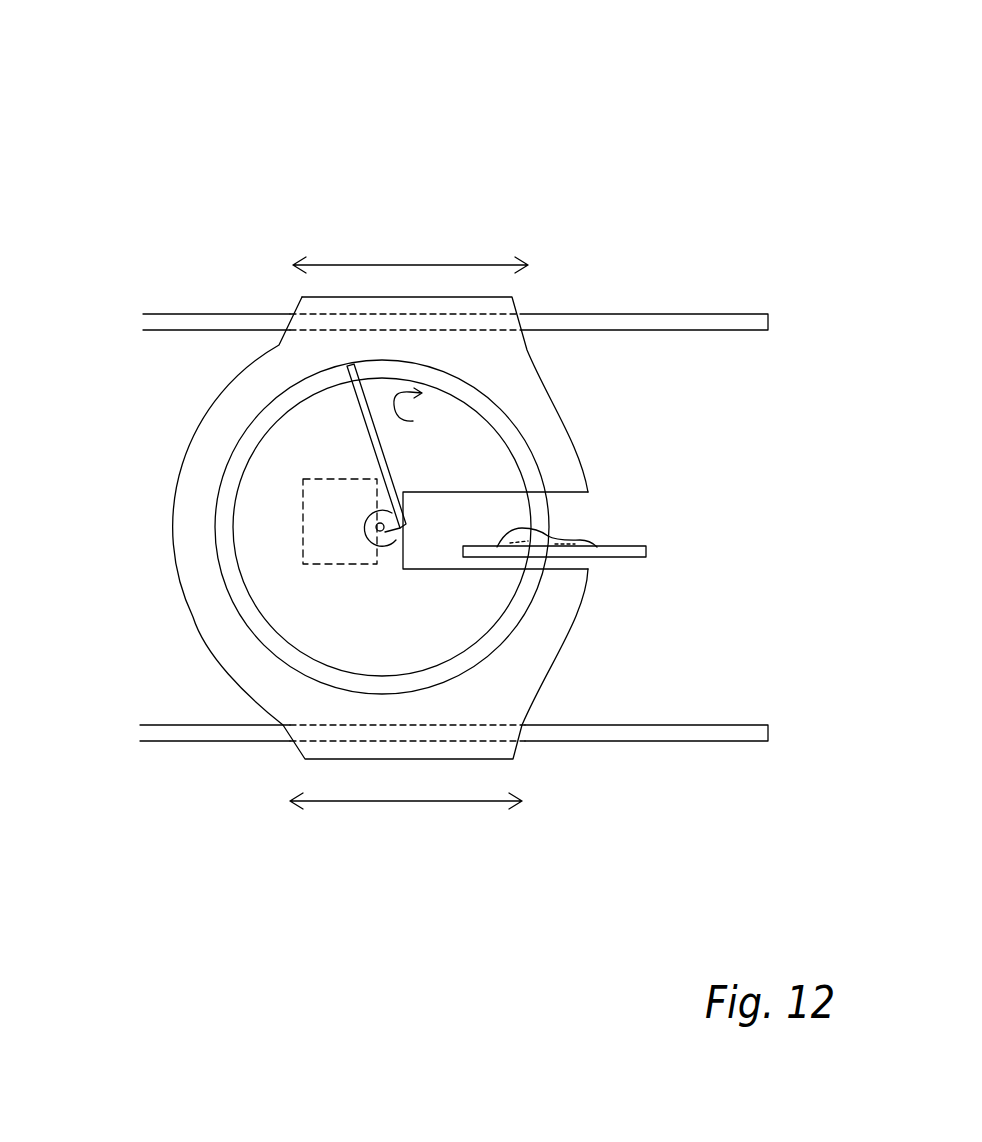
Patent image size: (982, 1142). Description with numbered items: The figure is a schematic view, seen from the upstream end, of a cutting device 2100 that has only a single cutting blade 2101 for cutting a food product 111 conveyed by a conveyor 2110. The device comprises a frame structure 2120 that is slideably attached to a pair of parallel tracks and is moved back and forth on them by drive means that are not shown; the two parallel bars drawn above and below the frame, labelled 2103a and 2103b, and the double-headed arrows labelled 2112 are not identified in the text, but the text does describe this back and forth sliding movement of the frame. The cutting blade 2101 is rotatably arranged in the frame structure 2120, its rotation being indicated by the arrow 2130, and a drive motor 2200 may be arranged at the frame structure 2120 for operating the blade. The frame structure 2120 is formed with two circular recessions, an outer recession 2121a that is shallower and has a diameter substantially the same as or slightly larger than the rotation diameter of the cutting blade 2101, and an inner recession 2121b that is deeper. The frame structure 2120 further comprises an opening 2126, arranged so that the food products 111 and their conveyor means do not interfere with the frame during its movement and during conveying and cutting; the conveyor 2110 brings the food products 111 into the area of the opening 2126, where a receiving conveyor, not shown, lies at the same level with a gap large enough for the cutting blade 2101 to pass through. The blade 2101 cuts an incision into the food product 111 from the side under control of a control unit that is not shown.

The cutting device 2100 is at (187, 207).
The lateral width 2112 is at (413, 264).
The upper plate 2103a is at (643, 313).
The lower plate 2103b is at (702, 742).
The frame structure 2120 is at (217, 402).
The outer recession 2121a is at (217, 512).
The inner recession 2121b is at (392, 632).
The opening 2126 is at (488, 529).
The arrow 2130 is at (403, 421).
The cutting blade 2101 is at (387, 473).
The food product 111 is at (547, 532).
The conveyor 2110 is at (607, 557).
The drive motor 2200 is at (300, 540).